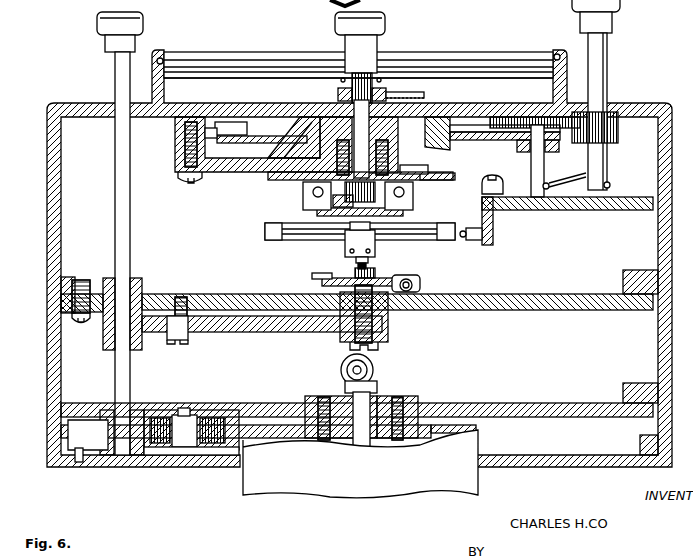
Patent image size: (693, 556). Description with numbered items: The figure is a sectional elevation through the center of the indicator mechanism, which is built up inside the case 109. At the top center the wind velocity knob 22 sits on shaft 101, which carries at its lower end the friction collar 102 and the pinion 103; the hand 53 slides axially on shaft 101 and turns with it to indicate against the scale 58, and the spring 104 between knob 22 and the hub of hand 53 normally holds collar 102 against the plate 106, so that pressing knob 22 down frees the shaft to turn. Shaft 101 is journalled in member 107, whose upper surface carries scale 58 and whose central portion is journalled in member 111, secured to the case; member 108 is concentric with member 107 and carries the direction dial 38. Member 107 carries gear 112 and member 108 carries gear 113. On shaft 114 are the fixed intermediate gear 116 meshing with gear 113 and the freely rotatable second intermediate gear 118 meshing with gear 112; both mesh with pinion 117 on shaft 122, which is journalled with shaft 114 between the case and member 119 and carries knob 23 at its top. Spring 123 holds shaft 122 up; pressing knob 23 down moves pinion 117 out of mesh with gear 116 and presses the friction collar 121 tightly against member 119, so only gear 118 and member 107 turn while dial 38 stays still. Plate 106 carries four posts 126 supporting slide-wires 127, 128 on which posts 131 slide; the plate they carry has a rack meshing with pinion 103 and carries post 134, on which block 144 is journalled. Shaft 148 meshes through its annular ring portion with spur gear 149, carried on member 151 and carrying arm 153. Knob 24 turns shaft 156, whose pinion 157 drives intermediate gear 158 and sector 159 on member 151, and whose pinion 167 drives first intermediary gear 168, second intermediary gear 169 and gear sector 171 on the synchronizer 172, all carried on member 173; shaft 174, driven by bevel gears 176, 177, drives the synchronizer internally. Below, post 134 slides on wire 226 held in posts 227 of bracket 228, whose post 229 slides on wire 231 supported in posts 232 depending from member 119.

The wind velocity knob 22 is at (380, 22).
The knob 23 is at (614, 8).
The knob 24 is at (137, 23).
The direction dial 38 is at (261, 102).
The hand 53 is at (416, 95).
The scale 58 is at (314, 102).
The shaft 101 is at (362, 128).
The friction collar 102 is at (352, 190).
The pinion 103 is at (345, 197).
The spring 104 is at (380, 84).
The plate 106 is at (456, 174).
The member 107 is at (287, 122).
The member 108 is at (253, 137).
The case 109 is at (160, 118).
The member 111 is at (230, 176).
The gear 112 is at (488, 140).
The gear 113 is at (211, 136).
The shaft 114 is at (542, 168).
The intermediate gear 116 is at (512, 140).
The pinion 117 is at (619, 128).
The second intermediate gear 118 is at (565, 141).
The member 119 is at (621, 212).
The friction collar 121 is at (568, 212).
The shaft 122 is at (608, 60).
The spring 123 is at (611, 181).
The posts 126 is at (325, 187).
The slide-wire 127 is at (318, 198).
The slide-wire 128 is at (367, 191).
The posts 131 is at (405, 205).
The post 134 is at (368, 268).
The block 144 is at (376, 252).
The shaft 148 is at (421, 285).
The spur gear 149 is at (402, 278).
The member 151 is at (549, 310).
The arm 153 is at (333, 276).
The shaft 156 is at (128, 255).
The pinion 157 is at (100, 335).
The intermediate gear 158 is at (153, 333).
The sector 159 is at (240, 333).
The pinion 167 is at (100, 448).
The first intermediary gear 168 is at (158, 448).
The second intermediary gear 169 is at (160, 425).
The gear sector 171 is at (222, 470).
The synchronizer 172 is at (478, 487).
The member 173 is at (277, 403).
The shaft 174 is at (355, 455).
The bevel gear 176 is at (378, 388).
The bevel gear 177 is at (375, 366).
The wire 226 is at (305, 242).
The posts 227 is at (272, 243).
The bracket 228 is at (268, 230).
The post 229 is at (466, 240).
The wire 231 is at (493, 232).
The posts 232 is at (478, 243).